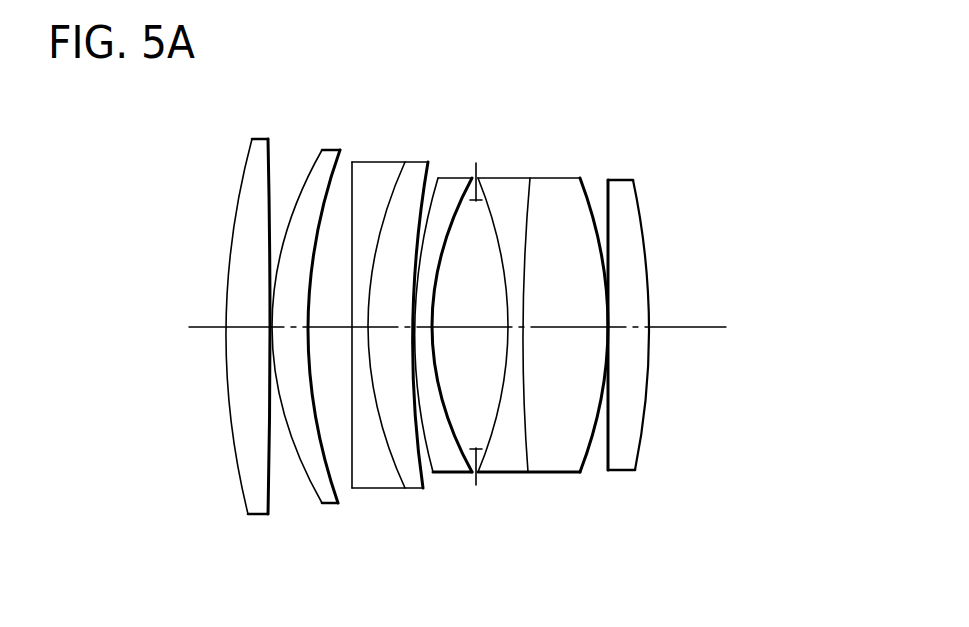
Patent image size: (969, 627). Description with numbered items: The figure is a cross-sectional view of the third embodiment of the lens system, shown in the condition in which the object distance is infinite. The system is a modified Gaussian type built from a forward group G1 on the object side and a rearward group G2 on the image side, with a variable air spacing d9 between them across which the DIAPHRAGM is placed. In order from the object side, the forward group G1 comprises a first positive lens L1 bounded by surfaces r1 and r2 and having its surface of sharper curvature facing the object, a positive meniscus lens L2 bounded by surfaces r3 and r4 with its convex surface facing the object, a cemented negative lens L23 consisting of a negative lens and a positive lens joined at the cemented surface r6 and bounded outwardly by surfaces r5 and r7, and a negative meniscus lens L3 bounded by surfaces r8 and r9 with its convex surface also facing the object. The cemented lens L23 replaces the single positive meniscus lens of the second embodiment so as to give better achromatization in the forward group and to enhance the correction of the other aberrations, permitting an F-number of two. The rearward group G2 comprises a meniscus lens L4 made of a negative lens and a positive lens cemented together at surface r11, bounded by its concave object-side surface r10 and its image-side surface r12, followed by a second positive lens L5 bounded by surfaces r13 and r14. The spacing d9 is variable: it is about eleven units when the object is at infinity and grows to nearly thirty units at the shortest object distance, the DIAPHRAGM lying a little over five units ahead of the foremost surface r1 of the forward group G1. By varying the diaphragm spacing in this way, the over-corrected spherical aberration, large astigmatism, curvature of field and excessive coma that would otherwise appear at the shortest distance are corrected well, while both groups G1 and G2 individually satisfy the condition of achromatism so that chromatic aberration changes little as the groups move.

The forward group G1 is at (480, 84).
The rearward group G2 is at (647, 84).
The first positive lens L1 is at (258, 138).
The positive meniscus lens L2 is at (332, 150).
The negative lens L23' L23 is at (432, 147).
The negative meniscus lens L3 is at (450, 178).
The meniscus lens L4 is at (582, 152).
The second positive lens L5 is at (626, 178).
The first lens surface r1 is at (247, 516).
The second lens surface r2 is at (270, 516).
The third lens surface r3 is at (322, 505).
The fourth lens surface r4 is at (338, 505).
The fifth lens surface r5 is at (352, 490).
The sixth lens surface r6 is at (378, 490).
The seventh lens surface r7 is at (413, 490).
The eighth lens surface r8 is at (437, 474).
The ninth lens surface r9 is at (457, 474).
The tenth lens surface r10 is at (493, 474).
The eleventh lens surface r11 is at (525, 474).
The twelfth lens surface r12 is at (565, 474).
The thirteenth lens surface r13 is at (600, 472).
The fourteenth lens surface r14 is at (630, 472).
The variable air spacing d9 is at (467, 312).
The diaphragm DIAPHRAGM is at (480, 378).